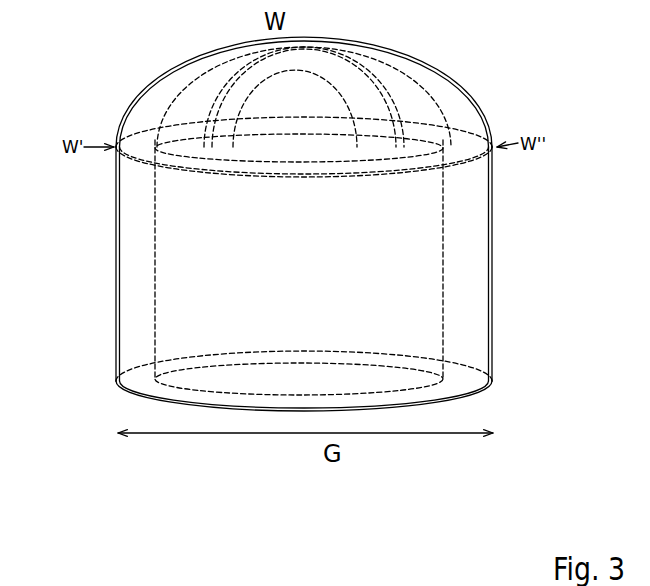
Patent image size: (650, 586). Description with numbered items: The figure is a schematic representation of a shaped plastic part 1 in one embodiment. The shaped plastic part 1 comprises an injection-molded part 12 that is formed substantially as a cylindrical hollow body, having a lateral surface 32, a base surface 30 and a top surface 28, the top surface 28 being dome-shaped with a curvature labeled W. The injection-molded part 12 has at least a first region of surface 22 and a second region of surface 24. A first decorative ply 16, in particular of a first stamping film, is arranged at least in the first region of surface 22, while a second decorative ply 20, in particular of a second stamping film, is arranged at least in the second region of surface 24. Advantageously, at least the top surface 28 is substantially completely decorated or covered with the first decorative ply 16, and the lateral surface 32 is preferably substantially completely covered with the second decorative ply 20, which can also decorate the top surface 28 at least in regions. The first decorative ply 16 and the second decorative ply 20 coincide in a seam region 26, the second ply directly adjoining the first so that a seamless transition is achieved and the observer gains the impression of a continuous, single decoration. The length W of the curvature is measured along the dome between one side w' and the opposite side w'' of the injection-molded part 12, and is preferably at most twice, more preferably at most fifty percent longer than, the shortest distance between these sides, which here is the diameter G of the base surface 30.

The shaped plastic part 1 is at (64, 62).
The injection-molded part 12 is at (118, 314).
The first decorative ply 16 is at (468, 80).
The second decorative ply 20 is at (492, 261).
The first region of surface 22 is at (393, 58).
The second region of surface 24 is at (492, 313).
The seam region 26 is at (493, 149).
The top surface 28 is at (170, 88).
The base surface 30 is at (163, 392).
The lateral surface 32 is at (119, 261).